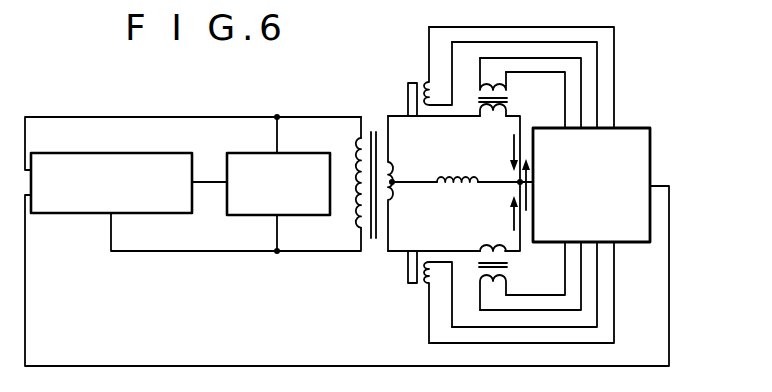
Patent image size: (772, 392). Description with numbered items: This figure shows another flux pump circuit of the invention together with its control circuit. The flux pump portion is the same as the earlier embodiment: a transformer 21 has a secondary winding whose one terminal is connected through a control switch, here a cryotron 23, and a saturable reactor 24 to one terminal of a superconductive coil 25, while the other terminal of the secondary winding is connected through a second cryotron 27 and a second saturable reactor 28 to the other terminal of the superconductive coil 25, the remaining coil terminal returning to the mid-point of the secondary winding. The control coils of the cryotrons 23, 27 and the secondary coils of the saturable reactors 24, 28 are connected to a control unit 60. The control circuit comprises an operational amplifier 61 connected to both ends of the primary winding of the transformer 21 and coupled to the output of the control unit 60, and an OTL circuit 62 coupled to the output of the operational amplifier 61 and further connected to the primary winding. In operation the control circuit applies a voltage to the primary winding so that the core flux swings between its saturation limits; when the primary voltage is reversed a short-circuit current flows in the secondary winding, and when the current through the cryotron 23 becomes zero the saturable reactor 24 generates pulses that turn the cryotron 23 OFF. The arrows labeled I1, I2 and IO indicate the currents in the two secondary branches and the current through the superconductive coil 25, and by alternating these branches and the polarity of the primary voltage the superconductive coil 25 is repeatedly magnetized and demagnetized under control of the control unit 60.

The transformer 21 is at (374, 126).
The cryotron 23 is at (410, 82).
The saturable reactor 24 is at (507, 99).
The superconductive coil 25 is at (458, 177).
The cryotron 27 is at (408, 268).
The saturable reactor 28 is at (507, 269).
The control unit 60 is at (636, 127).
The operational amplifier 61 is at (138, 153).
The OTL circuit 62 is at (311, 153).
The current I1 is at (513, 150).
The current I2 is at (513, 218).
The output current IO is at (528, 186).